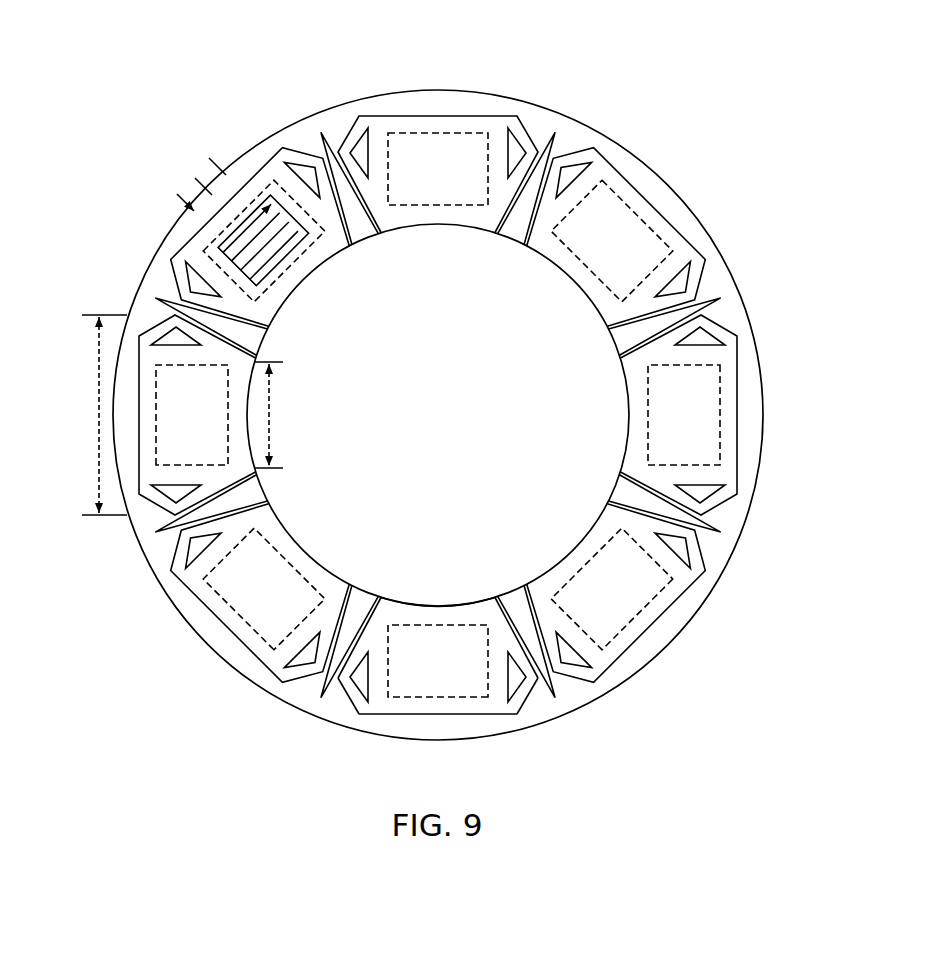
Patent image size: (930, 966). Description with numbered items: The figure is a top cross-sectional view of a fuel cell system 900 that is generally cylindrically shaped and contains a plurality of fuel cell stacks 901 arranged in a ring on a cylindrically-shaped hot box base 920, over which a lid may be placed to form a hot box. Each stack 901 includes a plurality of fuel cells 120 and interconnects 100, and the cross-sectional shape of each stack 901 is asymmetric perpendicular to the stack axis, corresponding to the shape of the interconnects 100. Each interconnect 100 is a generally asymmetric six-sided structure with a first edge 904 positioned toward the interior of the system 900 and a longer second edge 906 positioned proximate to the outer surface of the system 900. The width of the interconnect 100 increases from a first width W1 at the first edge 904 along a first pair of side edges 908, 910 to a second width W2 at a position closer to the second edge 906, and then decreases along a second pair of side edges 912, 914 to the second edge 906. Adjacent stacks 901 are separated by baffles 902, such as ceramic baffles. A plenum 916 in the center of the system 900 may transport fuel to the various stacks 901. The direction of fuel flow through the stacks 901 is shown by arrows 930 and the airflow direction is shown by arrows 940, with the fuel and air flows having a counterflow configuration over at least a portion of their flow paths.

The fuel cell system 900 is at (189, 70).
The fuel cell stack 901 is at (382, 116).
The baffle 902 is at (558, 137).
The first edge 904 is at (436, 607).
The second edge 906 is at (437, 717).
The first side edge 908 is at (377, 603).
The first side edge 910 is at (500, 604).
The second side edge 912 is at (357, 715).
The second side edge 914 is at (519, 715).
The plenum 916 is at (447, 417).
The hot box base 920 is at (758, 313).
The fuel flow arrows 930 is at (282, 250).
The airflow arrows 940 is at (178, 195).
The interconnect 100 is at (692, 415).
The fuel cell 120 is at (745, 413).
The first width W1 is at (276, 412).
The second width W2 is at (90, 409).